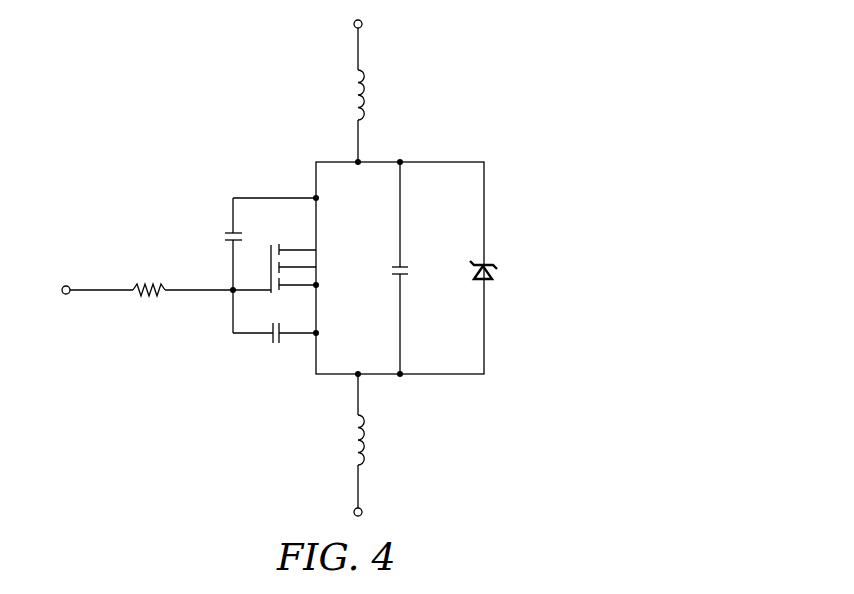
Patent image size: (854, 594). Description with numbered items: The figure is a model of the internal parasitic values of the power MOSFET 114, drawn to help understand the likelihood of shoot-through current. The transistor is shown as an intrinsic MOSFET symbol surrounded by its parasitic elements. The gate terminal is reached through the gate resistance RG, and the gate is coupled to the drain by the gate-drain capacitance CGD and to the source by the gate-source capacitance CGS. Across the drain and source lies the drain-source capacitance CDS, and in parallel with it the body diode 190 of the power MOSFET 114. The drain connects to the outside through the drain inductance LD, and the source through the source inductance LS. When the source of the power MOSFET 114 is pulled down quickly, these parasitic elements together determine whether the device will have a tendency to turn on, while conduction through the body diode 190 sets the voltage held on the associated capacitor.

The power MOSFET 114 is at (374, 229).
The body diode 190 is at (497, 274).
The drain inductance LD is at (376, 95).
The source inductance LS is at (375, 440).
The gate resistance RG is at (149, 275).
The gate-drain capacitance CGD is at (212, 242).
The gate-source capacitance CGS is at (275, 350).
The drain-source capacitance CDS is at (380, 275).